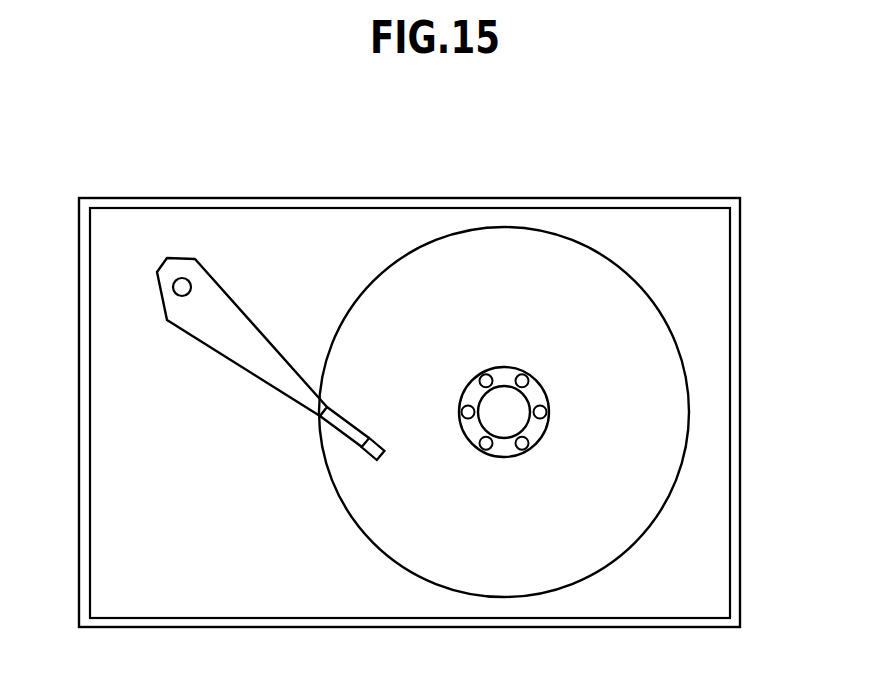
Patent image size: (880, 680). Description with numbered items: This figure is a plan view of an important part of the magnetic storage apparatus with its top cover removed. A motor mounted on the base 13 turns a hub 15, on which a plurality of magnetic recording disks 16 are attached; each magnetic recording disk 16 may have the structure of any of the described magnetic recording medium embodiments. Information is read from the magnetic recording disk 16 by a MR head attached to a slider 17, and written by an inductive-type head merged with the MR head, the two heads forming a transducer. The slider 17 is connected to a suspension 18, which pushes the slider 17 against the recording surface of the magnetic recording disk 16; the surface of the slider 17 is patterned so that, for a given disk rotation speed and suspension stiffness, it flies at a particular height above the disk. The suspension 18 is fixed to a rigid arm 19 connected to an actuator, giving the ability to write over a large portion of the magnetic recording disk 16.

The base 13 is at (742, 553).
The hub 15 is at (510, 412).
The magnetic recording disk 16 is at (605, 267).
The slider 17 is at (382, 445).
The suspension 18 is at (345, 422).
The rigid arm 19 is at (232, 333).